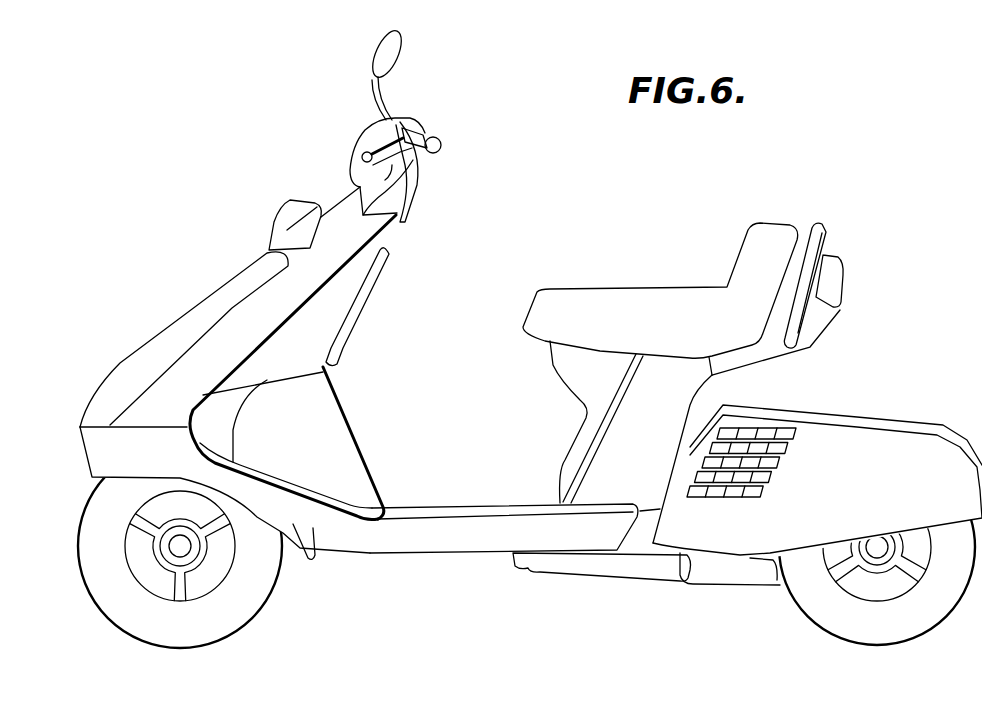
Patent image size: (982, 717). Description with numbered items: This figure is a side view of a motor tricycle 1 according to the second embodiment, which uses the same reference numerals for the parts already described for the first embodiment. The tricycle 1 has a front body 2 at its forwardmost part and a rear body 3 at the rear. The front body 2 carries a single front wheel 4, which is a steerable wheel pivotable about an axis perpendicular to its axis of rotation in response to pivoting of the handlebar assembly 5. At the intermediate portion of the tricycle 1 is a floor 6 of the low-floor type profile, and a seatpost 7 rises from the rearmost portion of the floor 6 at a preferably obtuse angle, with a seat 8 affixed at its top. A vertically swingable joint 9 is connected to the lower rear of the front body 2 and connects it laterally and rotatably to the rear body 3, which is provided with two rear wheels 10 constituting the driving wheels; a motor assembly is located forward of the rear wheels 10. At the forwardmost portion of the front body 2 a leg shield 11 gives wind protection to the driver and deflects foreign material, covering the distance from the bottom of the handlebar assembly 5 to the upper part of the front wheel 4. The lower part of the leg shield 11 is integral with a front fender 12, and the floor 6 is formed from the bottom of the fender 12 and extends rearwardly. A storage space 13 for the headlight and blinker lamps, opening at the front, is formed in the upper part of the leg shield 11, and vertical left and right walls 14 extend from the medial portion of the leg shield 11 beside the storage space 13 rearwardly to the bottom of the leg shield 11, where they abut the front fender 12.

The tricycle 1 is at (484, 252).
The front body 2 is at (376, 451).
The rear body 3 is at (910, 400).
The front wheel 4 is at (202, 628).
The handlebar assembly 5 is at (441, 145).
The floor 6 is at (450, 507).
The seatpost 7 is at (630, 423).
The seat 8 is at (643, 303).
The joint 9 is at (632, 563).
The rear wheels 10 is at (887, 623).
The leg shield 11 is at (222, 275).
The front fender 12 is at (103, 455).
The storage space 13 is at (290, 207).
The left and right walls 14 is at (280, 307).